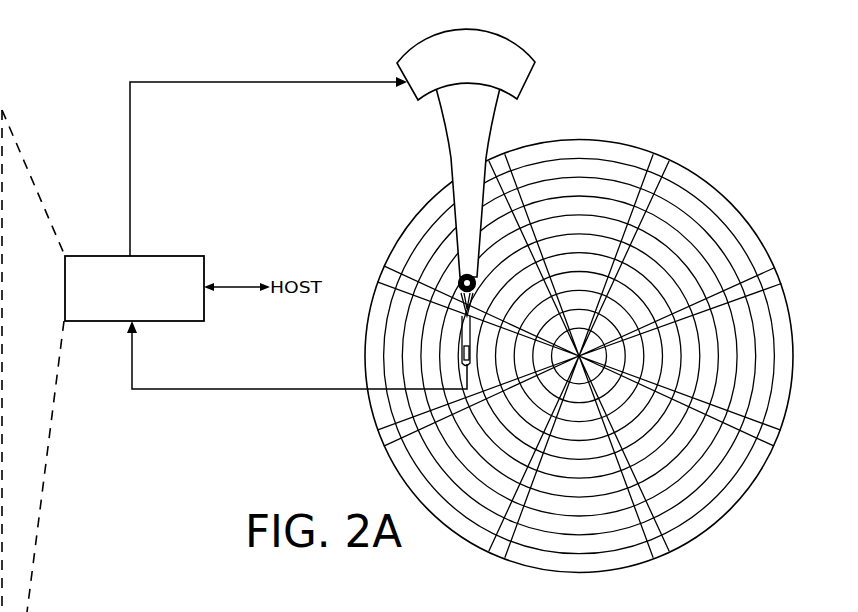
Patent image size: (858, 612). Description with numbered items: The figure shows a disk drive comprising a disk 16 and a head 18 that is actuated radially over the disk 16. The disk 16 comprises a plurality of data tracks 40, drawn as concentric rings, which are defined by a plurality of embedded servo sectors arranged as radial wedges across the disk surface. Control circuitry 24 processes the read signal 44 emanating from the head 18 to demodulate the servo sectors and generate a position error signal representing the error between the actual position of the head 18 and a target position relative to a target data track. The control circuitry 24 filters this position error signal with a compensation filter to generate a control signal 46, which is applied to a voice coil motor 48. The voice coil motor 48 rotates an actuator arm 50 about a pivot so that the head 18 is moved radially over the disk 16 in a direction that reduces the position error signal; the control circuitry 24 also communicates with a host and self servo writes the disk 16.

The disk 16 is at (732, 184).
The head 18 is at (452, 363).
The control circuitry 24 is at (168, 250).
The data tracks 40 is at (578, 166).
The read signal 44 is at (262, 382).
The control signal 46 is at (130, 152).
The voice coil motor 48 is at (412, 92).
The actuator arm 50 is at (449, 163).